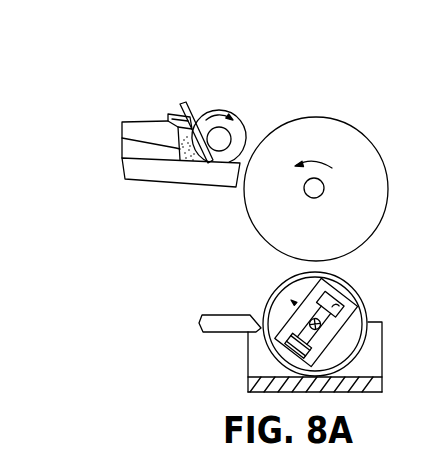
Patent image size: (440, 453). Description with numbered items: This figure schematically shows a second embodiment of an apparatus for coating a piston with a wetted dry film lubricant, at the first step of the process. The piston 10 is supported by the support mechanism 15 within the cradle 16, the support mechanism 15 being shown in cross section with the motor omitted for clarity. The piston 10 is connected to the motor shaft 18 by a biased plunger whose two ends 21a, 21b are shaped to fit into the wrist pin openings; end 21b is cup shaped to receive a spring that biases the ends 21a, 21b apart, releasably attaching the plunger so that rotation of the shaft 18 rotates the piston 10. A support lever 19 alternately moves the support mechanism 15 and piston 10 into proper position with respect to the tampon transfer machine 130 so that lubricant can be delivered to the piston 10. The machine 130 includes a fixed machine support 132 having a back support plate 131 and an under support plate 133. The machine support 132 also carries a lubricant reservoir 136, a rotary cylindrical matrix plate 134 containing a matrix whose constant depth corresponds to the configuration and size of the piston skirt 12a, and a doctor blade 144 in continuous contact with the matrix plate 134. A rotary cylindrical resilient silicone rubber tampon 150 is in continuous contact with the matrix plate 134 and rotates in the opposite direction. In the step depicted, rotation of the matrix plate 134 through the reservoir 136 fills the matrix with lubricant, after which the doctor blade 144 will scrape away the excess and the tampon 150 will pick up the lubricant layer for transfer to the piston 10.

The piston 10 is at (383, 259).
The piston skirt 12a is at (277, 290).
The support mechanism 15 is at (392, 385).
The cradle 16 is at (383, 348).
The motor shaft 18 is at (337, 334).
The support lever 19 is at (200, 322).
The plunger end 21a is at (336, 318).
The plunger end 21b is at (293, 341).
The tampon transfer machine 130 is at (285, 57).
The back support plate 131 is at (132, 122).
The fixed machine support 132 is at (154, 113).
The under support plate 133 is at (145, 173).
The rotary cylindrical matrix plate 134 is at (224, 109).
The lubricant reservoir 136 is at (187, 148).
The doctor blade 144 is at (175, 110).
The rotary cylindrical resilient silicone rubber tampon 150 is at (385, 119).